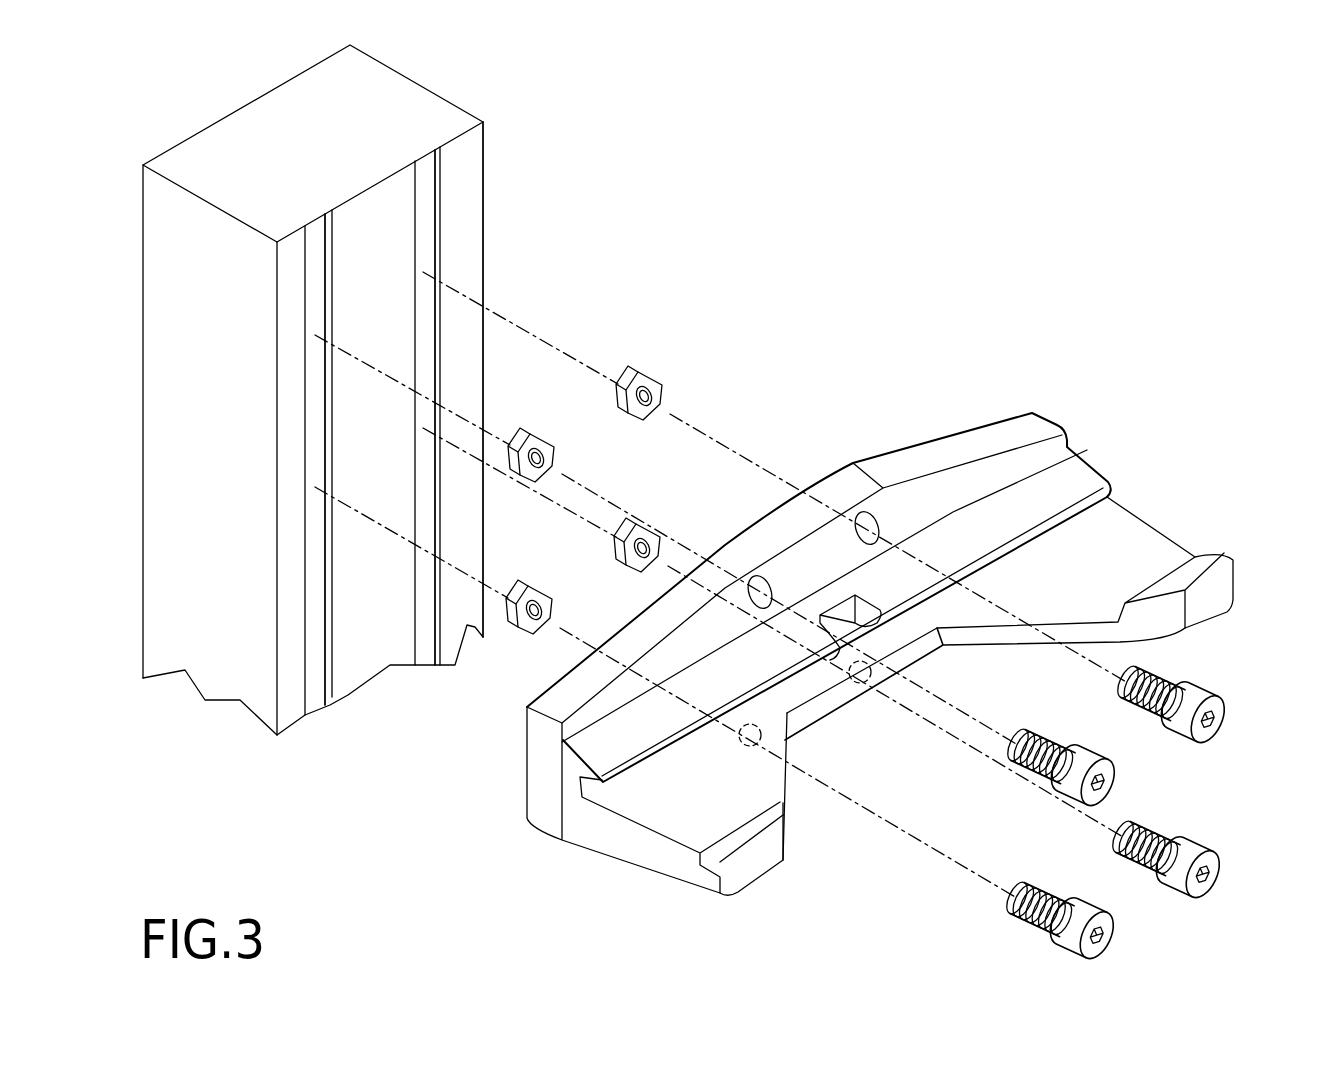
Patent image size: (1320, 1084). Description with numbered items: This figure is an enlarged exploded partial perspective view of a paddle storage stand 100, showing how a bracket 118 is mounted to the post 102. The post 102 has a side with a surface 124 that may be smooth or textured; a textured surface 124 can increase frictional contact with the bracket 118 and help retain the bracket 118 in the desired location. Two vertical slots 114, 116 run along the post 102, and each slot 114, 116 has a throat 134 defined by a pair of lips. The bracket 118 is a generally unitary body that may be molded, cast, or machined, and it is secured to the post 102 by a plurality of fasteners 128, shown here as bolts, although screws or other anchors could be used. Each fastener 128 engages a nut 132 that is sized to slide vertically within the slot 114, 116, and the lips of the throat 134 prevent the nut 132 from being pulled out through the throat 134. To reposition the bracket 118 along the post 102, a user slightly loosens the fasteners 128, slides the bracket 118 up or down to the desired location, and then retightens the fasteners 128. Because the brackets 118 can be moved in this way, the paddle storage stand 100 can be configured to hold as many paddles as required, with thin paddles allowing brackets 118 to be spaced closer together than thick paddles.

The paddle storage stand 100 is at (100, 300).
The post 102 is at (432, 112).
The slot 114 is at (300, 278).
The slot 116 is at (432, 222).
The surface 124 is at (480, 257).
The nut 132 is at (410, 193).
The throat 134 is at (430, 333).
The bracket 118 is at (1185, 365).
The fasteners 128 is at (1213, 723).